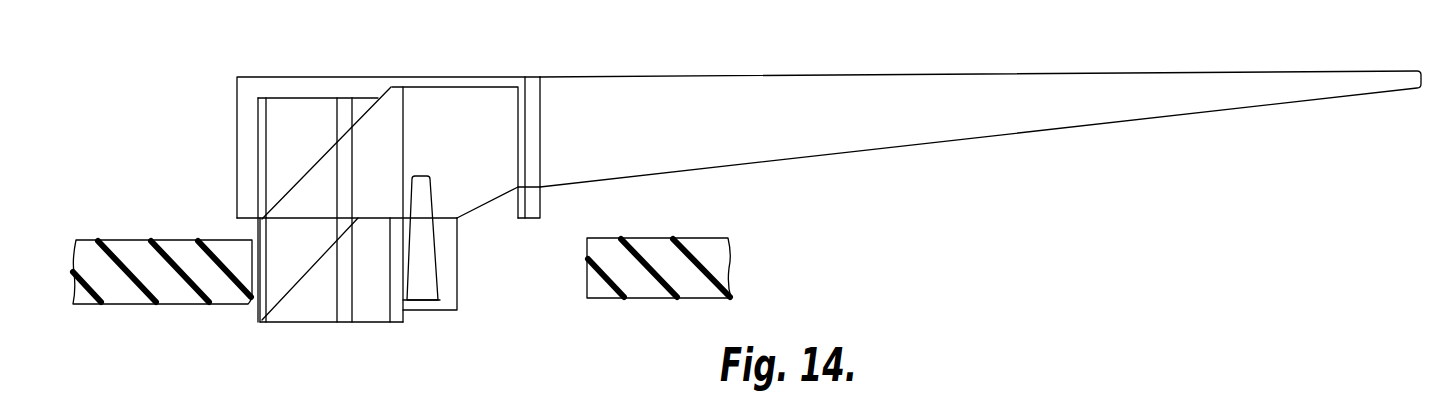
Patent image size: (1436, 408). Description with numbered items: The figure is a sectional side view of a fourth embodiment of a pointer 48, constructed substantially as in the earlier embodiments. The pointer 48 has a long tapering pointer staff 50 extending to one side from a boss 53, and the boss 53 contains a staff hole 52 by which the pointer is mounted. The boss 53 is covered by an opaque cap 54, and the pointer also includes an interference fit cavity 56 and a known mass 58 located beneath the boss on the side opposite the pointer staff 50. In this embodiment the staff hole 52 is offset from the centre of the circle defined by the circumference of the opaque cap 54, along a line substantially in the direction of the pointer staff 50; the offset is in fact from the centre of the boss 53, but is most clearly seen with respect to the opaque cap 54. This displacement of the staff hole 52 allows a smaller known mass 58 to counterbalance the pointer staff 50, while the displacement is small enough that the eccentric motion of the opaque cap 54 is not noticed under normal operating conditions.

The pointer 48 is at (757, 197).
The pointer staff 50 is at (1182, 78).
The staff hole 52 is at (427, 272).
The boss 53 is at (498, 97).
The opaque cap 54 is at (240, 100).
The interference fit cavity 56 is at (258, 305).
The known mass 58 is at (317, 305).